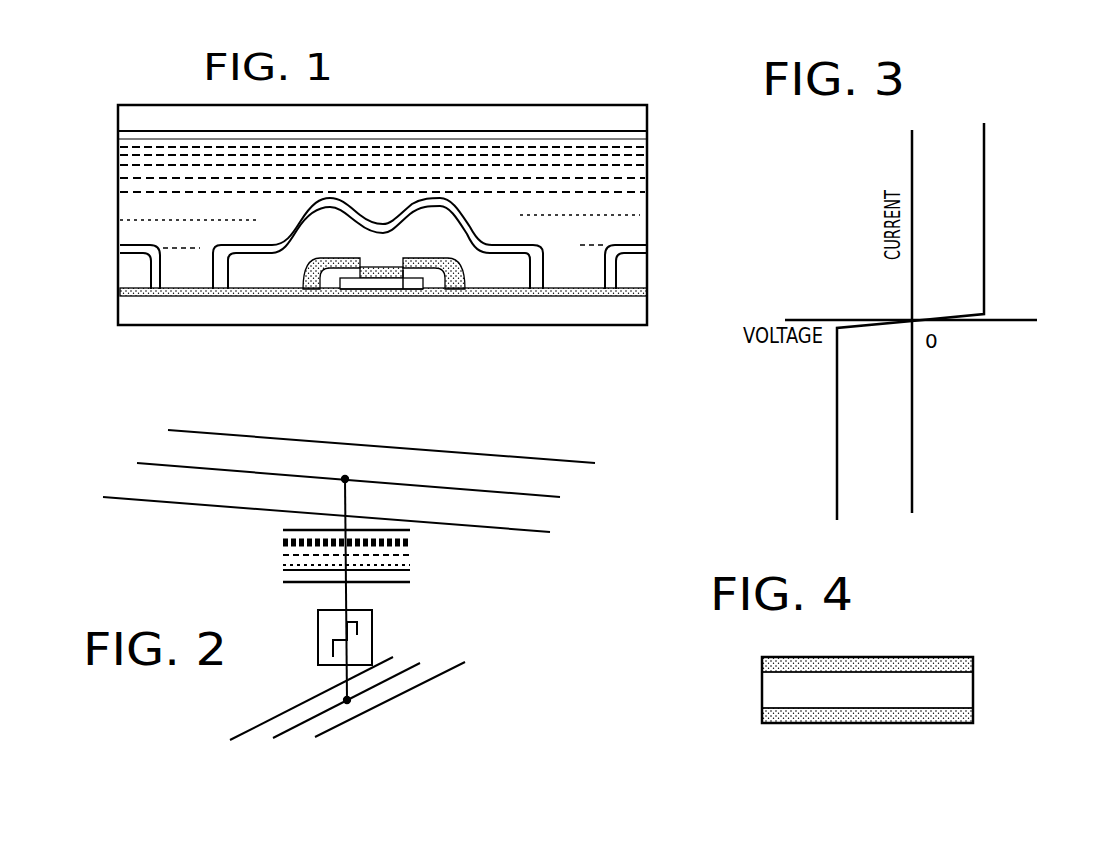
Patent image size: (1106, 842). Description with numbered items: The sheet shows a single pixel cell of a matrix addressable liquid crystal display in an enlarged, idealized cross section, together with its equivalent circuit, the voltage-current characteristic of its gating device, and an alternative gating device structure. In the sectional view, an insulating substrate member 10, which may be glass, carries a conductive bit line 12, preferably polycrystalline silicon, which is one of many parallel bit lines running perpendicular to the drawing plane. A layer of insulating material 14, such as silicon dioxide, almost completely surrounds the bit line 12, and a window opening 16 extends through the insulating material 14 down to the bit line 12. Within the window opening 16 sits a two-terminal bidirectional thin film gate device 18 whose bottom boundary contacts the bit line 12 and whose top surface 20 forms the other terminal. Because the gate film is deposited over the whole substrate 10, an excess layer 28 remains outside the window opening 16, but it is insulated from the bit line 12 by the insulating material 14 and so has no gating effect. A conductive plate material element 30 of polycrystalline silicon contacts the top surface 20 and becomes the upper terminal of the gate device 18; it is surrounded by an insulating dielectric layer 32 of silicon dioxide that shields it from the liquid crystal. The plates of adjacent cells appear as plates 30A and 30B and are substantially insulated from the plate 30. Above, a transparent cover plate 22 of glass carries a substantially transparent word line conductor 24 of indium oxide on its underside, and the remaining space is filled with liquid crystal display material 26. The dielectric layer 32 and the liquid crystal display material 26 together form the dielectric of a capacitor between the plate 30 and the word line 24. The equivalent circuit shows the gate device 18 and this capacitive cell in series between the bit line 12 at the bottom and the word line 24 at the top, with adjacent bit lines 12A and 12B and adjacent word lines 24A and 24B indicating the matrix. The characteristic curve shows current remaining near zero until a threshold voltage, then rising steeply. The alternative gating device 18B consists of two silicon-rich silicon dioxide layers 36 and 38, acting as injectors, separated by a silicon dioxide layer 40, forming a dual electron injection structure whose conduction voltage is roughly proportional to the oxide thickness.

In FIG. 1, the insulating substrate member 10 is at (647, 309).
In FIG. 1, the bit line 12 is at (383, 288).
In FIG. 2, the bit line 12 is at (420, 663).
In FIG. 2, the adjacent bit line 12A is at (235, 736).
In FIG. 2, the adjacent bit line 12B is at (465, 662).
In FIG. 1, the insulating material 14 is at (328, 285).
In FIG. 1, the window opening 16 is at (400, 280).
In FIG. 1, the gate device 18 is at (393, 268).
In FIG. 2, the gate device 18 is at (373, 633).
In FIG. 4, the alternative gating device 18B is at (900, 648).
In FIG. 1, the top surface of the gate device 20 is at (368, 276).
In FIG. 1, the transparent cover plate 22 is at (430, 107).
In FIG. 1, the word line conductor 24 is at (540, 134).
In FIG. 2, the word line conductor 24 is at (562, 497).
In FIG. 2, the adjacent word line 24A is at (595, 463).
In FIG. 2, the adjacent word line 24B is at (348, 519).
In FIG. 1, the liquid crystal display material 26 is at (640, 176).
In FIG. 2, the liquid crystal display material 26 is at (283, 557).
In FIG. 1, the excess layer 28 is at (245, 295).
In FIG. 1, the conductive plate material element 30 is at (344, 247).
In FIG. 2, the conductive plate material element 30 is at (400, 583).
In FIG. 1, the upper terminal plate of adjacent cell 30A is at (132, 270).
In FIG. 1, the upper terminal plate of adjacent cell 30B is at (645, 272).
In FIG. 1, the insulating dielectric layer 32 is at (483, 240).
In FIG. 2, the insulating dielectric layer 32 is at (402, 574).
In FIG. 4, the silicon-rich silicon dioxide layer 36 is at (973, 662).
In FIG. 4, the silicon-rich silicon dioxide layer 38 is at (973, 715).
In FIG. 4, the silicon dioxide layer 40 is at (973, 685).